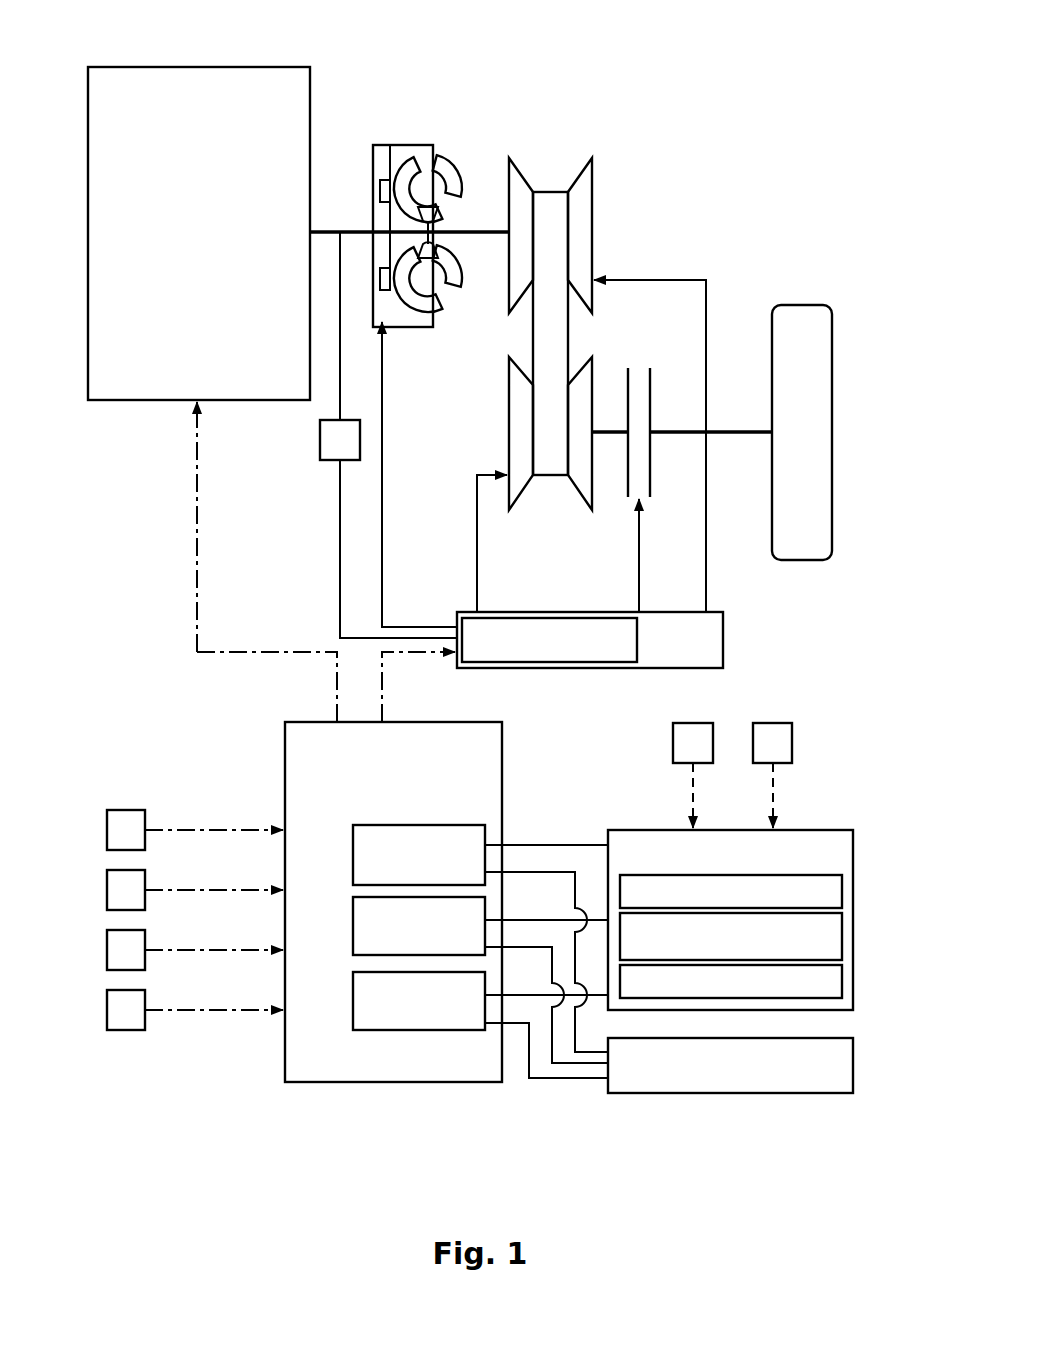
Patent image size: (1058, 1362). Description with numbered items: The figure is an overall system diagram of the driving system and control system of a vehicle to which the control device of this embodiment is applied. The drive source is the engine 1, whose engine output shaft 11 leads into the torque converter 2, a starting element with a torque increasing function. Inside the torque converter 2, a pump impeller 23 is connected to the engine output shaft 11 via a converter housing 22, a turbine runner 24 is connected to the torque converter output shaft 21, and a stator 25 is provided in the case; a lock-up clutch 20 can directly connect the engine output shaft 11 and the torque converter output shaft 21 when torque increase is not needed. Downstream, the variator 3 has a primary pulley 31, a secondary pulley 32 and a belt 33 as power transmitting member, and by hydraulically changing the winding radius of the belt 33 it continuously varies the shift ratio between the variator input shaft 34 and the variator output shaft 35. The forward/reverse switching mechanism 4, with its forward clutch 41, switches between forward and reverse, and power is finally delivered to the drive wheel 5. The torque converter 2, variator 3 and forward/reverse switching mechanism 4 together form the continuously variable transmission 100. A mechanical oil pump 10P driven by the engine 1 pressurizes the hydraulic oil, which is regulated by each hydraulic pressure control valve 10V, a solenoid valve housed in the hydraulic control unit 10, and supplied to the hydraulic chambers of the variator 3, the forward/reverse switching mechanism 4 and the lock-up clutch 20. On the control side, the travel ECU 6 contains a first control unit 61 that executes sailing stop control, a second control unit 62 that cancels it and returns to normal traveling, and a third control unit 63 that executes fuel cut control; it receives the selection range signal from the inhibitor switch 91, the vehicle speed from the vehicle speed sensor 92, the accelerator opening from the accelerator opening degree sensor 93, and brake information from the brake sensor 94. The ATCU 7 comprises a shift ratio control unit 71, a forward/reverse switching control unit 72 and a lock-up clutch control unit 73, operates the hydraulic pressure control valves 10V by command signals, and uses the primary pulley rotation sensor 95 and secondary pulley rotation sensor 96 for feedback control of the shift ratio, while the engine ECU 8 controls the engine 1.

The engine 1 is at (197, 67).
The continuously variable transmission 100 is at (702, 156).
The torque converter 2 is at (422, 212).
The lock-up clutch 20 is at (386, 170).
The torque converter output shaft 21 is at (440, 283).
The converter housing 22 is at (387, 143).
The pump impeller 23 is at (458, 172).
The turbine runner 24 is at (414, 158).
The stator 25 is at (440, 212).
The variator 3 is at (549, 308).
The primary pulley 31 is at (592, 228).
The secondary pulley 32 is at (509, 412).
The belt 33 is at (568, 332).
The variator input shaft 34 is at (483, 239).
The variator output shaft 35 is at (605, 430).
The forward/reverse switching mechanism 4 is at (642, 360).
The forward clutch 41 is at (651, 403).
The drive wheel 5 is at (804, 304).
The travel ECU 6 is at (446, 928).
The first control unit 61 is at (353, 853).
The second control unit 62 is at (353, 928).
The third control unit 63 is at (353, 1000).
The ATCU 7 is at (753, 920).
The shift ratio control unit 71 is at (842, 892).
The forward/reverse switching control unit 72 is at (842, 937).
The lock-up clutch control unit 73 is at (842, 978).
The engine ECU 8 is at (853, 1065).
The hydraulic control unit 10 is at (582, 474).
The oil pump 10P is at (320, 440).
The hydraulic pressure control valve 10V is at (637, 640).
The engine output shaft 11 is at (331, 228).
The inhibitor switch 91 is at (107, 829).
The vehicle speed sensor 92 is at (107, 889).
The accelerator opening degree sensor 93 is at (107, 949).
The brake sensor 94 is at (107, 1009).
The primary pulley rotation sensor 95 is at (673, 741).
The secondary pulley rotation sensor 96 is at (793, 741).